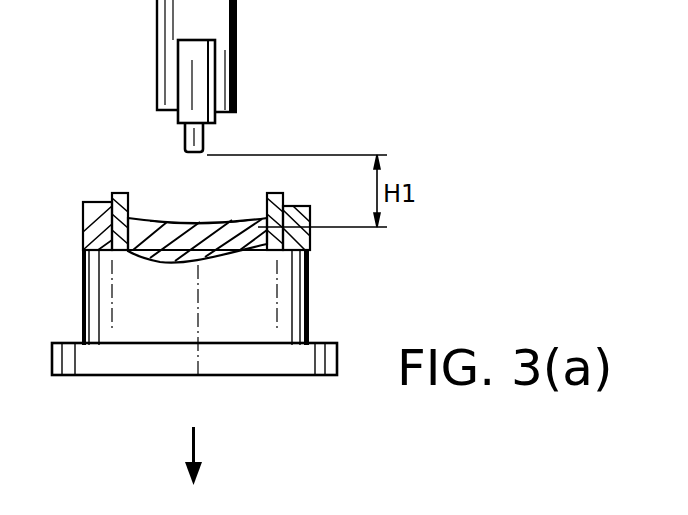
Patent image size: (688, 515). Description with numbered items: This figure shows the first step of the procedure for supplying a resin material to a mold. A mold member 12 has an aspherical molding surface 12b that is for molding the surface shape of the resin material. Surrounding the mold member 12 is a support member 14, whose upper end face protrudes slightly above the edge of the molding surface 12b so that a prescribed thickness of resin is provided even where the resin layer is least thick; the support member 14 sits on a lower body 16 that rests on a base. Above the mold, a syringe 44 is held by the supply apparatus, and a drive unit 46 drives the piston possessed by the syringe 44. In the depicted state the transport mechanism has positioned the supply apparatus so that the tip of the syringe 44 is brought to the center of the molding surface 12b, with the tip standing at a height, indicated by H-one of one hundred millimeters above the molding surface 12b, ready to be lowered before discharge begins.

The mold member 12 is at (152, 237).
The molding surface 12b is at (205, 221).
The support member 14 is at (308, 243).
The lower die 16 is at (283, 298).
The syringe 44 is at (187, 80).
The drive unit 46 is at (213, 18).